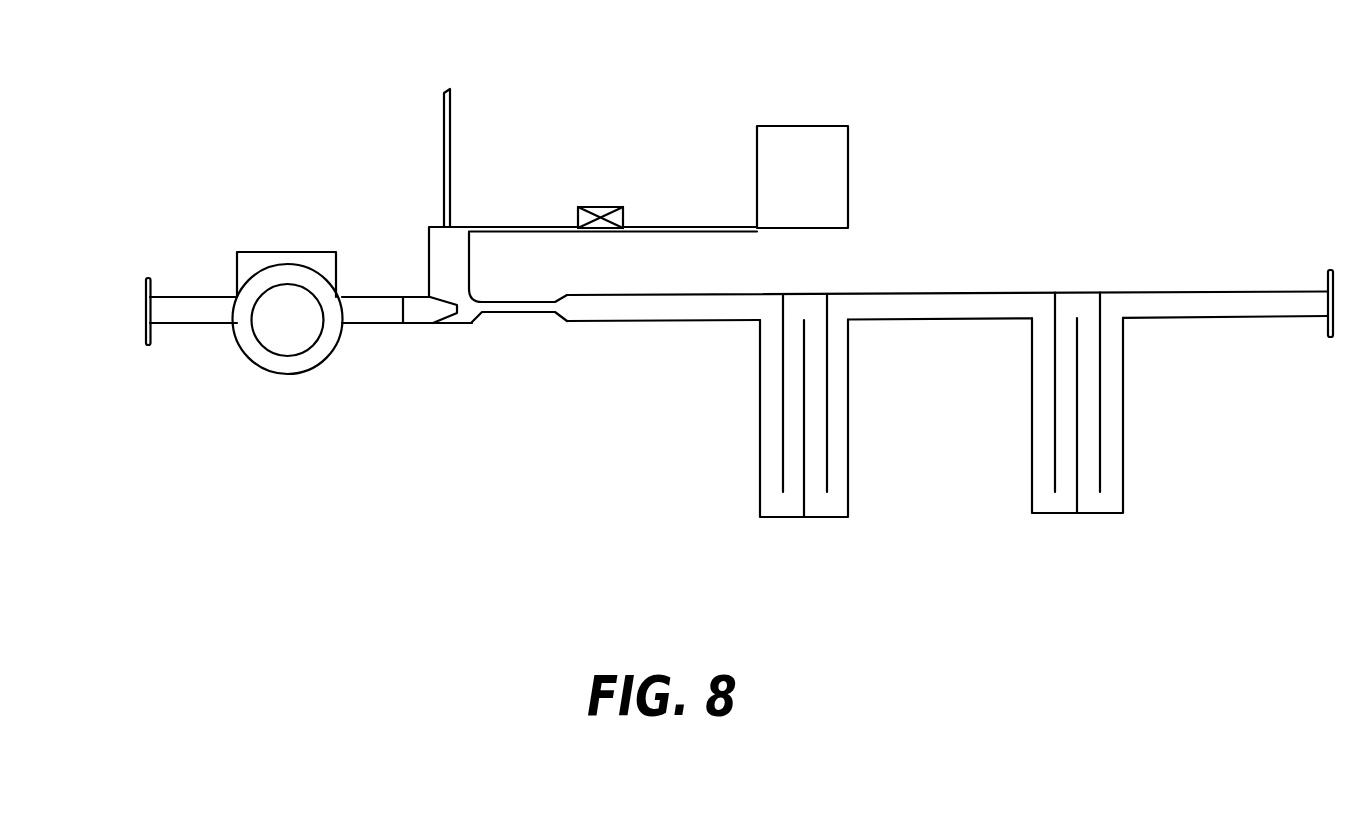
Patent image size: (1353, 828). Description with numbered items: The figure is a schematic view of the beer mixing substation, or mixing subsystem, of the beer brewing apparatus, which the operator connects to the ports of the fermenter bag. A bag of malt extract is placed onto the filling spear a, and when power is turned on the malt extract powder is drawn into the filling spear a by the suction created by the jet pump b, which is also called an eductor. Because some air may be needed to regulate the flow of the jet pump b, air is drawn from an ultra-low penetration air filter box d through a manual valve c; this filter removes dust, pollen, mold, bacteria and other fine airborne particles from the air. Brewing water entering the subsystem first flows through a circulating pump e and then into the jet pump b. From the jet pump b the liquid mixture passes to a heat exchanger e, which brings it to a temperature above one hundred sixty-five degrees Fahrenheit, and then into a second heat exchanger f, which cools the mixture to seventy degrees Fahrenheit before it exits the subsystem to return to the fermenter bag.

The filling spear a is at (426, 145).
The jet pump b is at (478, 351).
The manual valve c is at (609, 182).
The ULPA filter box d is at (794, 114).
The heat exchanger e is at (285, 392).
The second heat exchanger f is at (1116, 270).